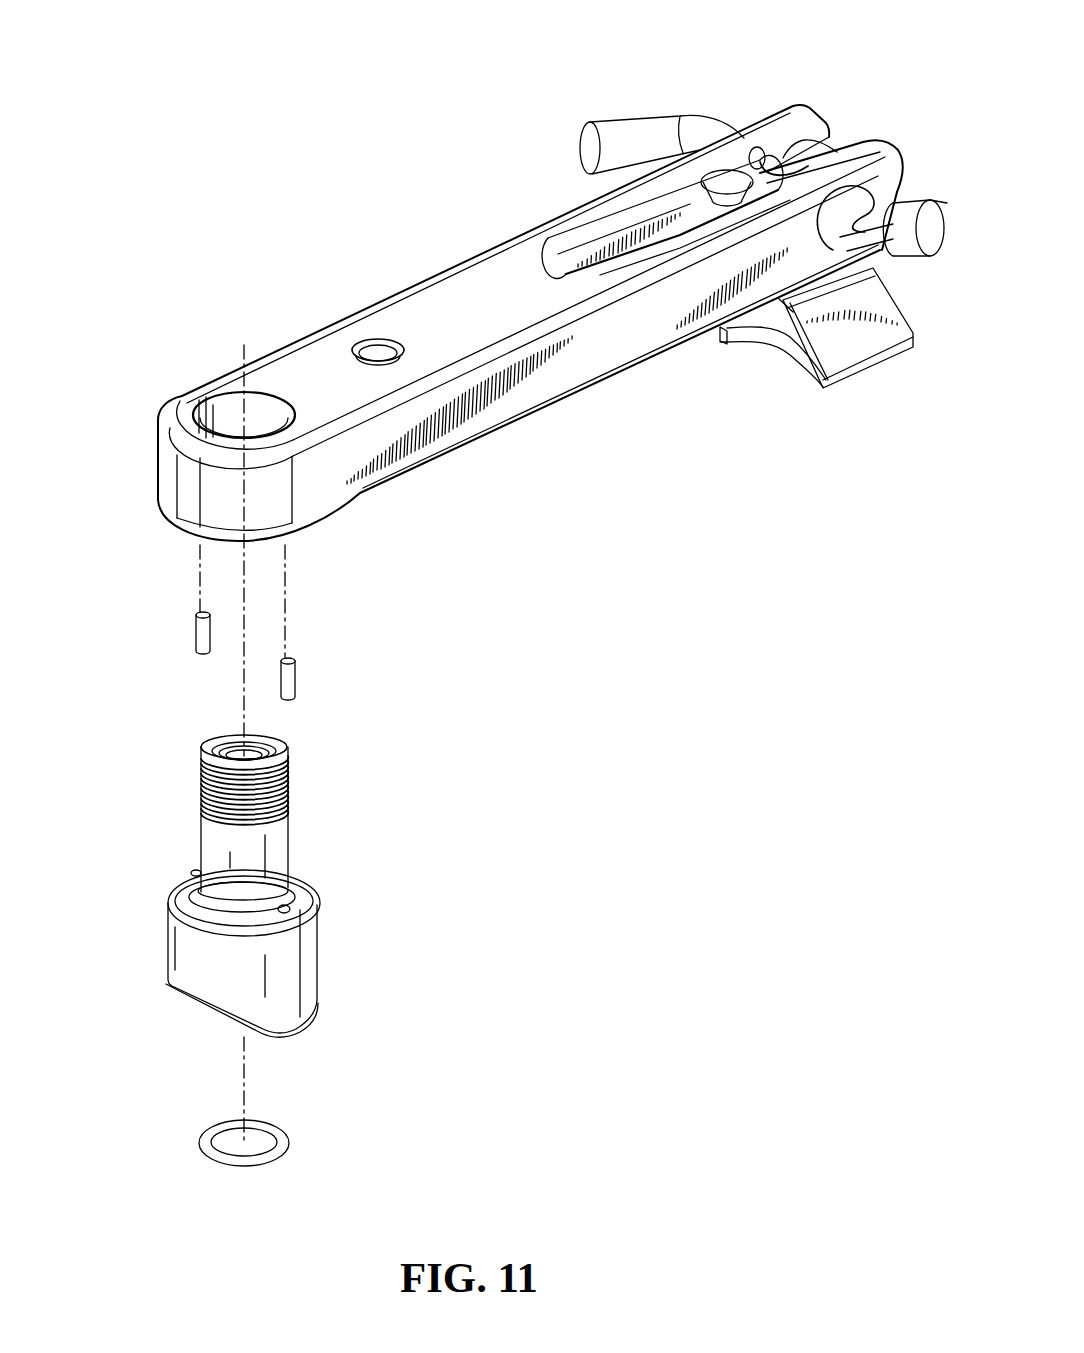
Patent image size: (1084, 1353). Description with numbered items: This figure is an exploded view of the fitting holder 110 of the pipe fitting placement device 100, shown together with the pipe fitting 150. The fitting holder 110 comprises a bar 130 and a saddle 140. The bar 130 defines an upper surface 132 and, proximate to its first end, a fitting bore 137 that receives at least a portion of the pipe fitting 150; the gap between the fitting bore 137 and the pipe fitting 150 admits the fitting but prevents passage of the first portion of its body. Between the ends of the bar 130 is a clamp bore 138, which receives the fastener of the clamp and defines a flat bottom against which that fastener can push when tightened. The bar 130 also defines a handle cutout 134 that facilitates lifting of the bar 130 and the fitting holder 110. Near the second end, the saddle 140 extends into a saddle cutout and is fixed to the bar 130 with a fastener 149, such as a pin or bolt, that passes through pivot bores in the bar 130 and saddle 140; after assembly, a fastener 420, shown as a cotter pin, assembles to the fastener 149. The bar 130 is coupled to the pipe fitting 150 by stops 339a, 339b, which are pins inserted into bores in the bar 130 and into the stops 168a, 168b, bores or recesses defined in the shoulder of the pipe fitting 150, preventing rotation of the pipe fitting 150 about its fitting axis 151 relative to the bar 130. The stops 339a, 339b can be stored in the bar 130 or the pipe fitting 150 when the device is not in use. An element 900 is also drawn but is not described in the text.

The pipe fitting placement device 100 is at (501, 602).
The fitting holder 110 is at (501, 602).
The bar 130 is at (508, 274).
The upper surface 132 is at (475, 293).
The handle cutout 134 is at (620, 262).
The fitting bore 137 is at (215, 408).
The clamp bore 138 is at (378, 352).
The saddle 140 is at (838, 345).
The fastener 149 is at (640, 128).
The fastener 420 is at (928, 178).
The stop 339a is at (290, 677).
The stop 339b is at (200, 633).
The pipe fitting 150 is at (232, 940).
The fitting axis 151 is at (246, 1081).
The stop 168a is at (288, 912).
The stop 168b is at (198, 874).
The O-ring 900 is at (284, 1150).